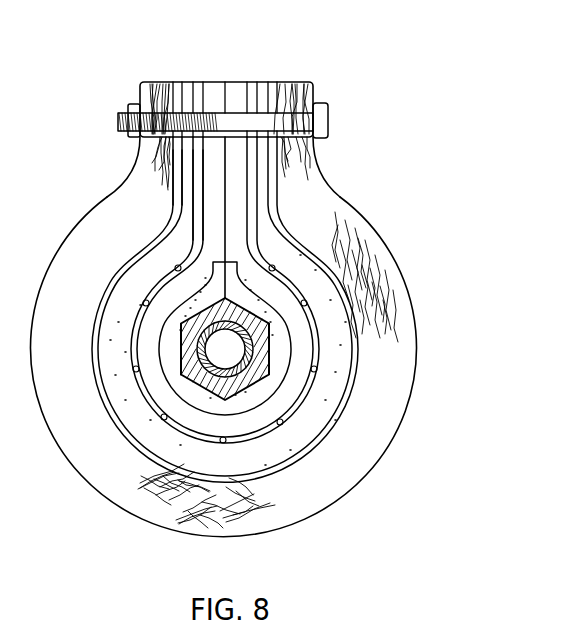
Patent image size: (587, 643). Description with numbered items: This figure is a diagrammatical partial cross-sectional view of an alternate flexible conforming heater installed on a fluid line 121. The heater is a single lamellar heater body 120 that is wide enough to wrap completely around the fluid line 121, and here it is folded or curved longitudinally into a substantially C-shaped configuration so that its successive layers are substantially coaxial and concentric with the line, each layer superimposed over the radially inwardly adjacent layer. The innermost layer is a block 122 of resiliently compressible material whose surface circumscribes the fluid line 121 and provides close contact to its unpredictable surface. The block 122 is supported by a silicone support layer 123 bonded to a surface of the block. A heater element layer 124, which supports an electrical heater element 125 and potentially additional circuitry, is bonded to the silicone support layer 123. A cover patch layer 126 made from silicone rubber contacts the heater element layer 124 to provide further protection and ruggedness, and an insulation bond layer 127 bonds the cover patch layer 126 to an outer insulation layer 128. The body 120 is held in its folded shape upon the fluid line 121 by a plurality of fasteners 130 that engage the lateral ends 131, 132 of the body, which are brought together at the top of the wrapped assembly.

The lamellar heater body 120 is at (358, 220).
The fluid line 121 is at (262, 292).
The block 122 is at (295, 355).
The silicone support layer 123 is at (293, 383).
The heater element layer 124 is at (317, 418).
The electrical heater element 125 is at (177, 267).
The cover patch layer 126 is at (308, 443).
The insulation bond layer 127 is at (316, 447).
The insulation layer 128 is at (302, 500).
The fasteners 130 is at (328, 120).
The lateral end 131 is at (188, 82).
The lateral end 132 is at (283, 82).